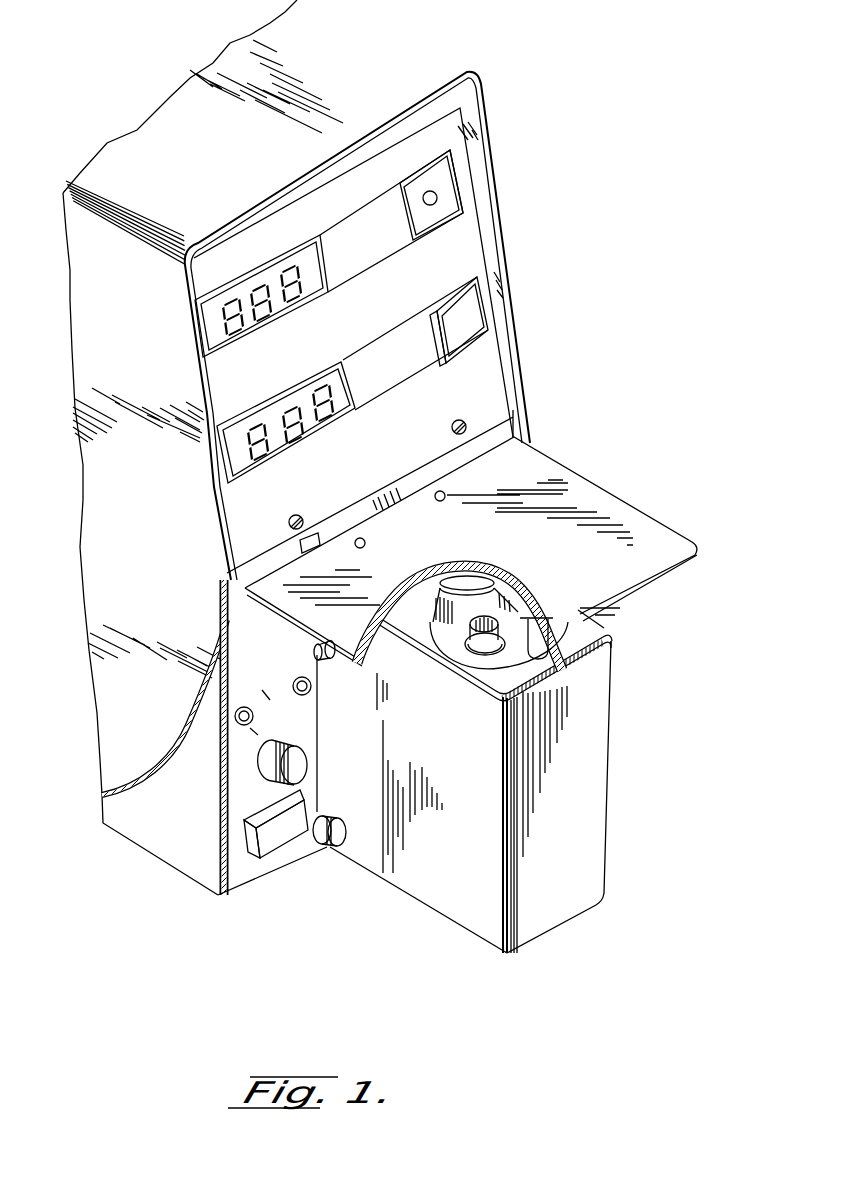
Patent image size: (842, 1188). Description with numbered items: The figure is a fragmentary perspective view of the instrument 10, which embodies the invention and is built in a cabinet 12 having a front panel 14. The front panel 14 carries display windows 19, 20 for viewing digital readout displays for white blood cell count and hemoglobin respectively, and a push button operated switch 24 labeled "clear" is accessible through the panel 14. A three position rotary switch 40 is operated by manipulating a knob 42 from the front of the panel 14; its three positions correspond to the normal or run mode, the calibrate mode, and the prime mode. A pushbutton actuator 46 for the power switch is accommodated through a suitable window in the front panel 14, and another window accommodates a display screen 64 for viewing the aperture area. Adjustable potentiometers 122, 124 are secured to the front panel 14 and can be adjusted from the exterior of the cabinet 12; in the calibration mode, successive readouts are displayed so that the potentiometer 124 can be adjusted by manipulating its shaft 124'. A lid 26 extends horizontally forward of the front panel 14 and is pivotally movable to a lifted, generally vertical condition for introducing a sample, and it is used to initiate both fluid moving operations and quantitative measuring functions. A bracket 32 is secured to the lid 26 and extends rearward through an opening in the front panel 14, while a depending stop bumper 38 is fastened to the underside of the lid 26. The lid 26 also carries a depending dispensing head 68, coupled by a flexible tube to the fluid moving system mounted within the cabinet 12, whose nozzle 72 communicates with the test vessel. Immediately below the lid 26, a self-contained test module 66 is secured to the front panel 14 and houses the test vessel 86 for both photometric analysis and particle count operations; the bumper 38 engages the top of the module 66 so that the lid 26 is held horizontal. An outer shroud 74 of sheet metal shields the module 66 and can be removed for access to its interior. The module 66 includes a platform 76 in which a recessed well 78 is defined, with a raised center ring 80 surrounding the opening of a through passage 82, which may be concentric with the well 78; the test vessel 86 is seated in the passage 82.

The instrument 10 is at (76, 123).
The cabinet 12 is at (115, 757).
The front panel 14 is at (503, 407).
The display window 19 is at (208, 318).
The display window 20 is at (237, 446).
The push button operated switch 24 is at (480, 322).
The lid 26 is at (550, 473).
The bracket 32 is at (305, 540).
The stop bumper 38 is at (565, 663).
The three position rotary switch 40 is at (308, 727).
The knob 42 is at (270, 776).
The pushbutton actuator 46 is at (270, 848).
The display screen 64 is at (446, 198).
The test module 66 is at (624, 757).
The dispensing head 68 is at (480, 574).
The nozzle 72 is at (500, 592).
The outer shroud 74 is at (425, 885).
The platform 76 is at (512, 697).
The recessed well 78 is at (448, 618).
The raised center ring 80 is at (443, 627).
The through passage 82 is at (478, 650).
The test vessel 86 is at (522, 620).
The adjustable potentiometer 122 is at (292, 684).
The adjustable potentiometer 124 is at (200, 697).
The shaft 124' is at (198, 715).